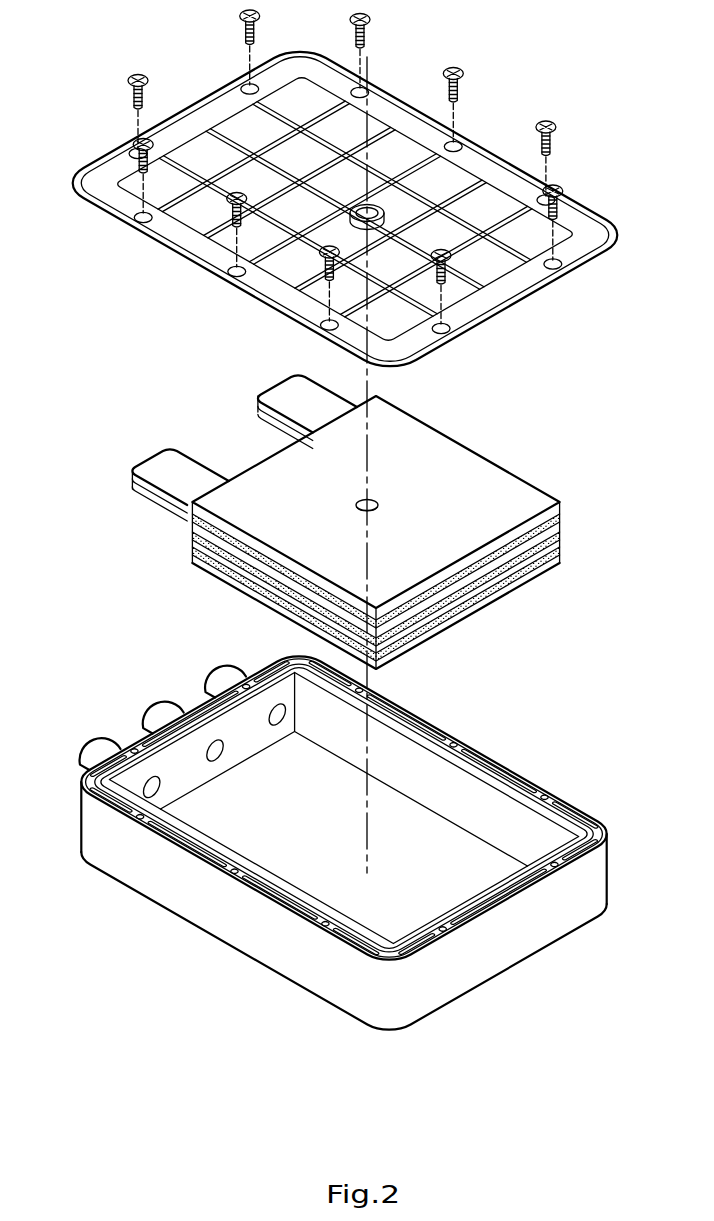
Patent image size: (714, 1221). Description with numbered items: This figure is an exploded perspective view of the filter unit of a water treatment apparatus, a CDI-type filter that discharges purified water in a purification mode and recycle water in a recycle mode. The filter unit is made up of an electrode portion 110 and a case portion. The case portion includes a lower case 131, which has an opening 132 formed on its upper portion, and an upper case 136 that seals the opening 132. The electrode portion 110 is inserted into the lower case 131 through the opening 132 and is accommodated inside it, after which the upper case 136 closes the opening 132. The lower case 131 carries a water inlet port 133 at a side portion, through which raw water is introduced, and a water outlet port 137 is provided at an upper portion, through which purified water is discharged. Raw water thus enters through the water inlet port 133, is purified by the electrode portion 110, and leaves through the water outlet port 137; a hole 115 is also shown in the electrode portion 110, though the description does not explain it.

The electrode portion 110 is at (513, 483).
The through hole 115 is at (378, 498).
The lower case 131 is at (218, 930).
The opening 132 is at (428, 826).
The water inlet port 133 is at (156, 717).
The upper case 136 is at (187, 240).
The water outlet port 137 is at (366, 204).